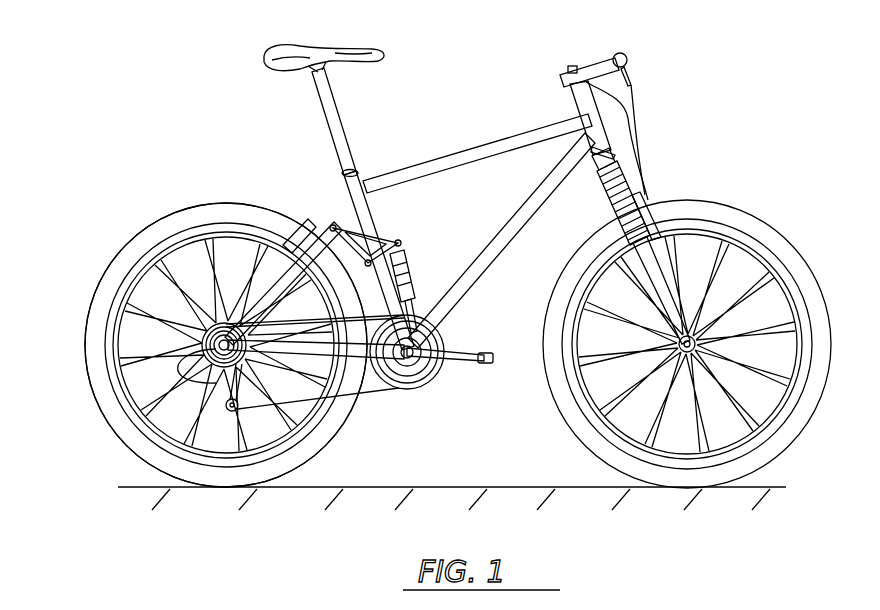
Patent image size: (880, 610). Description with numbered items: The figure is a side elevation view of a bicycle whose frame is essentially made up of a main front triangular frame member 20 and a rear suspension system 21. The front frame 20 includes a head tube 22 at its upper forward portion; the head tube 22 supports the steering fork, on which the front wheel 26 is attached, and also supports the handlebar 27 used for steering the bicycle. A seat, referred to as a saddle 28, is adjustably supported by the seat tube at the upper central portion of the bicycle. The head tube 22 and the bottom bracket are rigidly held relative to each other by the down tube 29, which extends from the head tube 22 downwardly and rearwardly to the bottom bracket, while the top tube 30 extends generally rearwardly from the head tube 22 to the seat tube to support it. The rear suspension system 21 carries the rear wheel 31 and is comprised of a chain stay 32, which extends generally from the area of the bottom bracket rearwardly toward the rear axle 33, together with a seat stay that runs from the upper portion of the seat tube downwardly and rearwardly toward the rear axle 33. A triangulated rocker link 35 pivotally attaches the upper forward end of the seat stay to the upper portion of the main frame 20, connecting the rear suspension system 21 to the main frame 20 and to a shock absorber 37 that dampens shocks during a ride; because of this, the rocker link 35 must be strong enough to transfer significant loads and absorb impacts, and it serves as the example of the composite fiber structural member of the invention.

The main front triangular frame member 20 is at (504, 118).
The rear suspension system 21 is at (198, 194).
The head tube 22 is at (612, 122).
The front wheel 26 is at (757, 218).
The handlebar 27 is at (625, 52).
The saddle 28 is at (322, 44).
The down tube 29 is at (497, 250).
The top tube 30 is at (437, 170).
The rear wheel 31 is at (113, 262).
The chain stay 32 is at (343, 413).
The rear axle 33 is at (205, 345).
The triangulated rocker link 35 is at (380, 233).
The shock absorber 37 is at (410, 273).